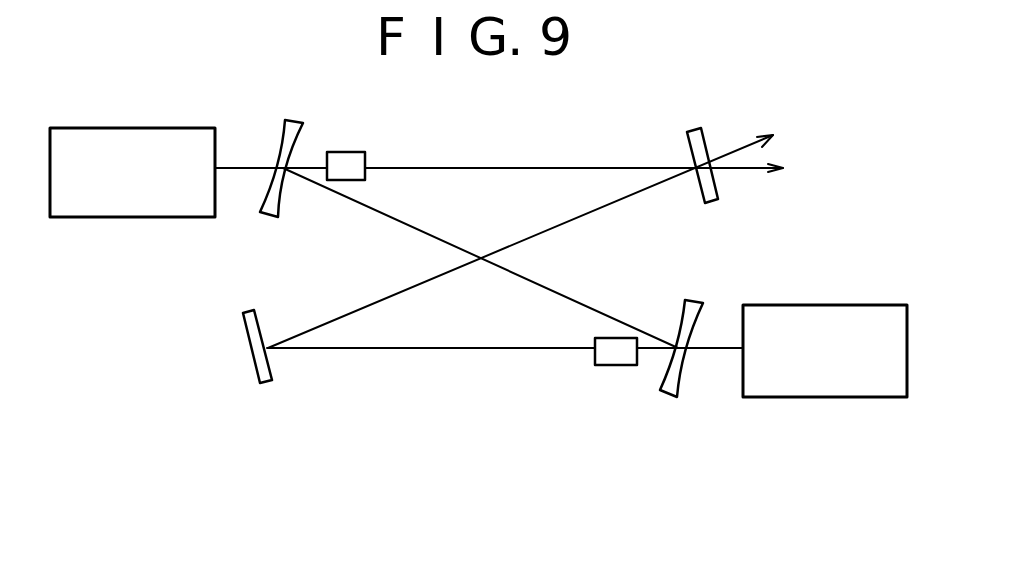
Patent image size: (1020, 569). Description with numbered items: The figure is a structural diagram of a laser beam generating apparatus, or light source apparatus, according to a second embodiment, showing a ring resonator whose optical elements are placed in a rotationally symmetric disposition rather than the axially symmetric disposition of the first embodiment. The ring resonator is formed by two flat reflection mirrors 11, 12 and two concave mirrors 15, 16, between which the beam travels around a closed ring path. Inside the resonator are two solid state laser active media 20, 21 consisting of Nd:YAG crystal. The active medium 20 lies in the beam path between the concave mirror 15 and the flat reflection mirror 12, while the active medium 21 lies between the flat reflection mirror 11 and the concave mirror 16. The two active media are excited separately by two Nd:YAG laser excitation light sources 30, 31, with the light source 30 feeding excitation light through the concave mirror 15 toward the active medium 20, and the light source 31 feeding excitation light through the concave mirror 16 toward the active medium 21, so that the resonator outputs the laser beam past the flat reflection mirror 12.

The laser excitation light source 30 is at (127, 128).
The concave mirror 15 is at (283, 133).
The solid state laser active medium 20 is at (343, 152).
The flat reflection mirror 12 is at (688, 151).
The flat reflection mirror 11 is at (272, 368).
The laser excitation light source 31 is at (818, 305).
The solid state laser active medium 21 is at (612, 366).
The concave mirror 16 is at (670, 398).